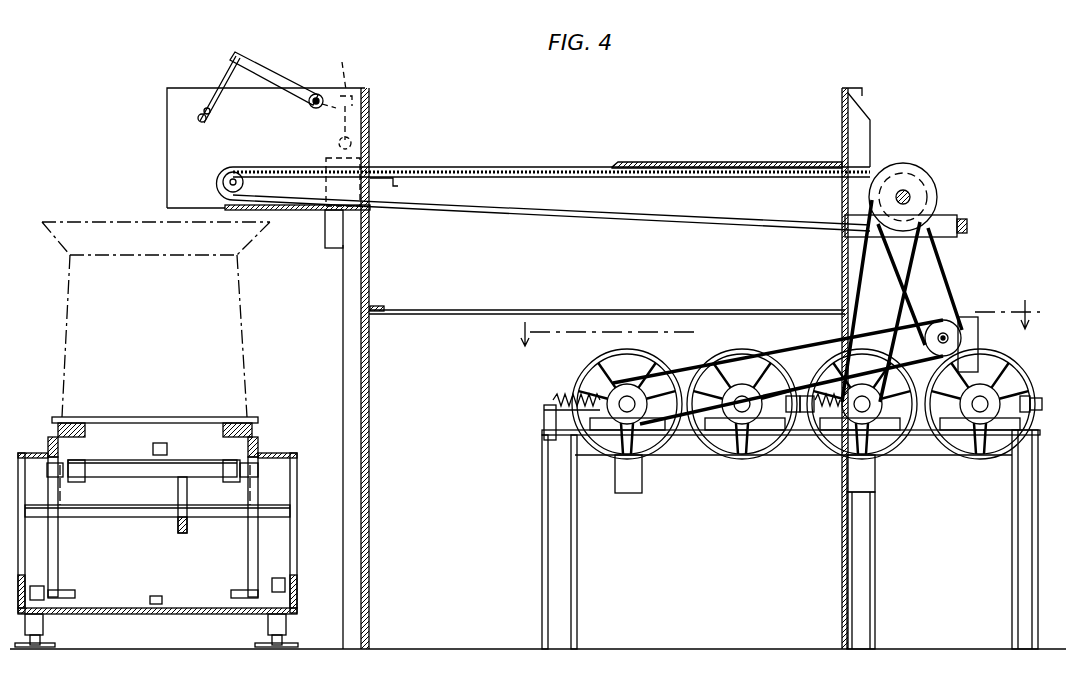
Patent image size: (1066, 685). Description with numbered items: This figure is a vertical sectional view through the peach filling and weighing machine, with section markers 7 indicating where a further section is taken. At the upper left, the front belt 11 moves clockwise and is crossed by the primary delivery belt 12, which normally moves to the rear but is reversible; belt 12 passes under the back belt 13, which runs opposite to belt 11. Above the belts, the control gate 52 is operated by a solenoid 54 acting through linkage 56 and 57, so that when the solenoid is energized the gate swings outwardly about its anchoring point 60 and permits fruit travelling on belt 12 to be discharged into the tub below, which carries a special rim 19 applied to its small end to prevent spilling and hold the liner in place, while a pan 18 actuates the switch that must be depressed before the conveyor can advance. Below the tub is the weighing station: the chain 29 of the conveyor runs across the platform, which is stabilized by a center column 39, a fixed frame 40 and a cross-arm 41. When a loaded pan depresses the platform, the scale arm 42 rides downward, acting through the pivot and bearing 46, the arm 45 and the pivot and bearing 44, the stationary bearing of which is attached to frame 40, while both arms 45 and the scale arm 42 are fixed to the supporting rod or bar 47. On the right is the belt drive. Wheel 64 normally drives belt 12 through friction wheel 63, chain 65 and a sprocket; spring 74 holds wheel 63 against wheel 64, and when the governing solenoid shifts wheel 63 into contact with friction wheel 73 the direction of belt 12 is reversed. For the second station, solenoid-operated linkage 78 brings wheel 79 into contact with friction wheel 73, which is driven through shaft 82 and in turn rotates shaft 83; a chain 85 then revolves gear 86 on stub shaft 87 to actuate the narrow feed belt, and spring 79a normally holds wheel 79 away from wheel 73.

The front belt 11 is at (504, 174).
The primary delivery belt 12 is at (466, 172).
The back belt 13 is at (692, 166).
The pan 18 is at (240, 308).
The special rim 19 is at (54, 236).
The chain 29 is at (153, 443).
The center column 39 is at (58, 575).
The fixed frame 40 is at (58, 612).
The cross-arm 41 is at (280, 584).
The scale arm 42 is at (182, 515).
The pivot and bearing 44 is at (60, 478).
The arm 45 is at (80, 462).
The pivot and bearing 46 is at (48, 455).
The supporting rod or bar 47 is at (153, 470).
The control gate 52 is at (232, 74).
The solenoid 54 is at (325, 232).
The linkage 56 is at (372, 120).
The linkage 57 is at (344, 90).
The anchoring point 60 is at (315, 94).
The friction wheel 63 is at (835, 455).
The wheel 64 is at (970, 458).
The chain 65 is at (848, 267).
The friction wheel 73 is at (722, 452).
The spring 74 is at (815, 396).
The linkage 78 is at (558, 438).
The wheel 79 is at (622, 403).
The spring 79a is at (565, 410).
The shaft 82 is at (738, 400).
The shaft 83 is at (612, 378).
The chain 85 is at (790, 352).
The gear 86 is at (935, 320).
The stub shaft 87 is at (945, 337).
The section line 7 is at (771, 317).